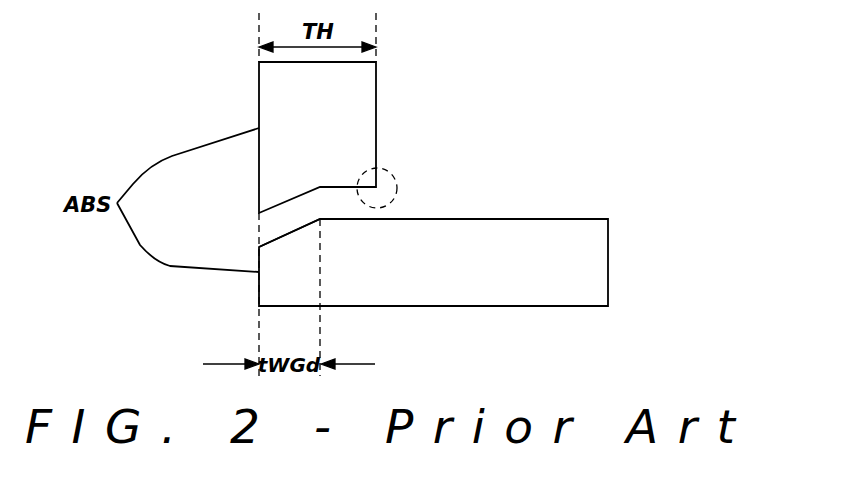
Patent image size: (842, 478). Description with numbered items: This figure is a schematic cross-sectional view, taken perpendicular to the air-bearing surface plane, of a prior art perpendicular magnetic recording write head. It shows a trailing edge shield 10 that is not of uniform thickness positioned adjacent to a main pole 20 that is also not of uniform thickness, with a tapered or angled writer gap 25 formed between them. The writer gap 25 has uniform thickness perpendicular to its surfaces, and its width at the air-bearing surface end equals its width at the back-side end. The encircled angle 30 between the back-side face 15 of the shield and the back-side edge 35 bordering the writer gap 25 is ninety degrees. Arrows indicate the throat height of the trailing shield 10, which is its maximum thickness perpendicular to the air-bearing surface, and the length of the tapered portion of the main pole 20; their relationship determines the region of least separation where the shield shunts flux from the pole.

The trailing edge shield 10 is at (355, 122).
The back-side face 15 is at (377, 83).
The main pole 20 is at (590, 257).
The writer gap 25 is at (270, 224).
The encircled angle 30 is at (388, 173).
The back-side edge 35 is at (352, 187).